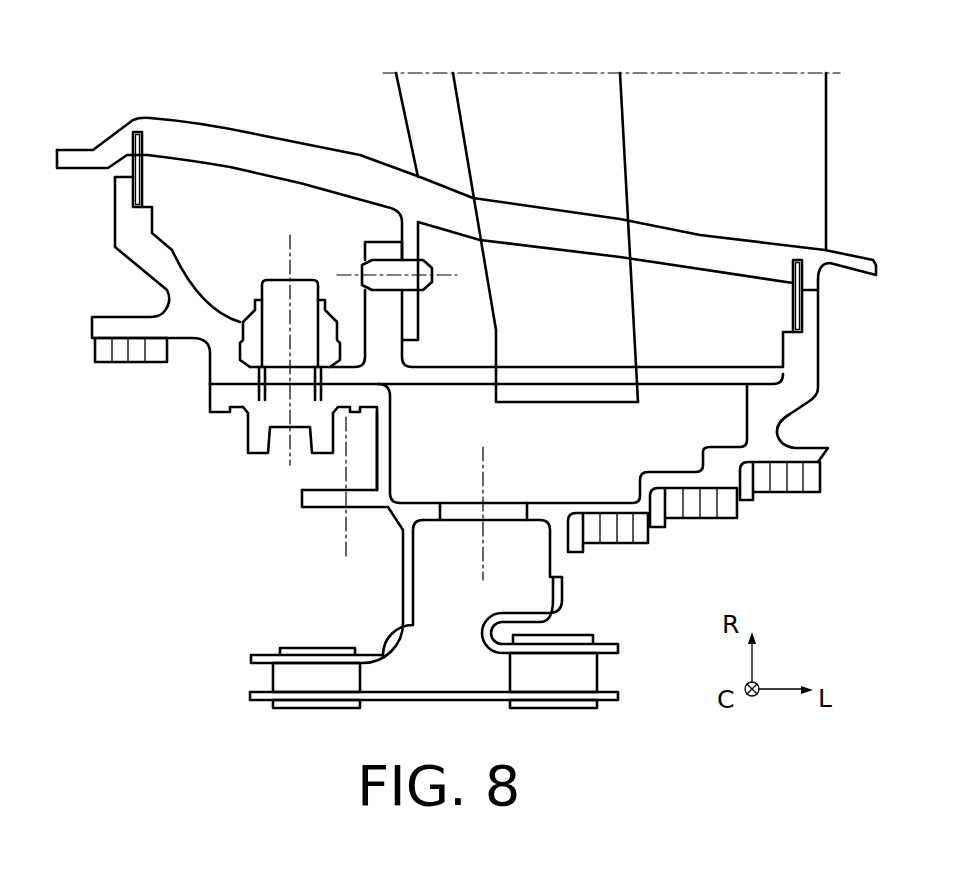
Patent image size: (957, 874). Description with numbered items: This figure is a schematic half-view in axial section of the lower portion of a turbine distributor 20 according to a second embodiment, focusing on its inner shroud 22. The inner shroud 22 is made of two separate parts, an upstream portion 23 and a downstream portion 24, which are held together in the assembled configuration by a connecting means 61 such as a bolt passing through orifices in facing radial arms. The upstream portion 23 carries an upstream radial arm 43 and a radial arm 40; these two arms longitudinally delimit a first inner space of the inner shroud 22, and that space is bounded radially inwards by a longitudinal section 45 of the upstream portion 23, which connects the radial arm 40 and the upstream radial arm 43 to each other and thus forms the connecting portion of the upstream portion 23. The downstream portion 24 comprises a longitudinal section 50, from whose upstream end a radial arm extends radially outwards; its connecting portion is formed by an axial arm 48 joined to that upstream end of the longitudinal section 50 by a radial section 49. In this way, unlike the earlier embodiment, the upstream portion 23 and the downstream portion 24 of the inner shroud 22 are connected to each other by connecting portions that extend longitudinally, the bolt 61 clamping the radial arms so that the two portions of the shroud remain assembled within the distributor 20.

The distributor 20 is at (205, 66).
The inner shroud 22 is at (282, 535).
The upstream portion 23 is at (193, 368).
The downstream portion 24 is at (362, 465).
The radial arm 40 is at (380, 240).
The upstream radial arm 43 is at (112, 203).
The longitudinal section 45 is at (347, 373).
The axial arm 48 is at (232, 410).
The radial section 49 is at (386, 441).
The longitudinal section 50 is at (427, 503).
The connecting means 61 is at (274, 268).